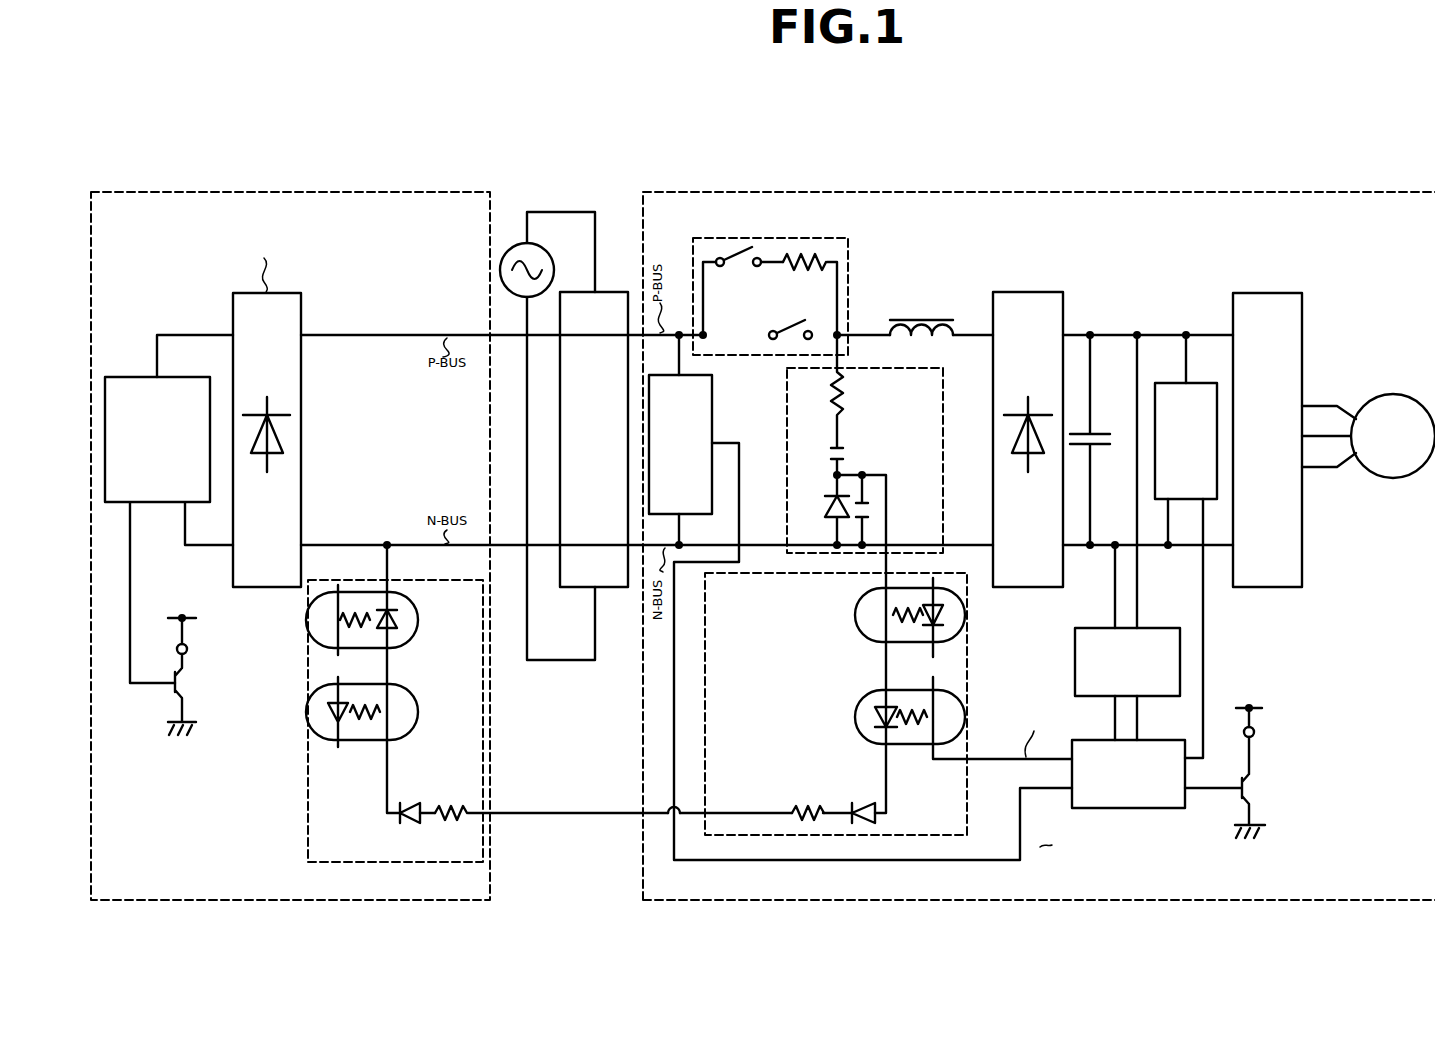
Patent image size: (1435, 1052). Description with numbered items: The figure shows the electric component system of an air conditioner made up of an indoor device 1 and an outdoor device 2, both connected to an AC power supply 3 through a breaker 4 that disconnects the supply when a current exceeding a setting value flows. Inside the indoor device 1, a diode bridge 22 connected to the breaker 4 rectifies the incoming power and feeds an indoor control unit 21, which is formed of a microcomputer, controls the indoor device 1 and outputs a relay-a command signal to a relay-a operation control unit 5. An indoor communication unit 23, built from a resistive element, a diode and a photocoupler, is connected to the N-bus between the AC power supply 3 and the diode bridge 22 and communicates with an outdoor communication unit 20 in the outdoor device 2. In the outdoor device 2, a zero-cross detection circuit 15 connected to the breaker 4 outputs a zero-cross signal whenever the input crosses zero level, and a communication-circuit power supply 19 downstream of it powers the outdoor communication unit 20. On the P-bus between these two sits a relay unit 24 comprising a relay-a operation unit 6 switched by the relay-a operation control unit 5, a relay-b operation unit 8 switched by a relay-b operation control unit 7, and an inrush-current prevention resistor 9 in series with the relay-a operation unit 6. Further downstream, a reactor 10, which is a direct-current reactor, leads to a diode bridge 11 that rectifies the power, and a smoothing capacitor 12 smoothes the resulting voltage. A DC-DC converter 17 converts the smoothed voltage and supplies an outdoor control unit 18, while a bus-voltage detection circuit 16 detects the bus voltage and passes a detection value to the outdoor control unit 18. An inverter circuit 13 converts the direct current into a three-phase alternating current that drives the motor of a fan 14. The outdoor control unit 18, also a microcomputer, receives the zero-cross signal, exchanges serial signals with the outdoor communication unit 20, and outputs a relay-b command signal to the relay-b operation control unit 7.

The indoor device 1 is at (290, 190).
The outdoor device 2 is at (1045, 190).
The AC power supply 3 is at (519, 242).
The breaker 4 is at (605, 292).
The relay-a operation control unit 5 is at (190, 684).
The relay-a operation unit 6 is at (724, 258).
The relay-b operation control unit 7 is at (1258, 790).
The relay-b operation unit 8 is at (780, 331).
The inrush-current prevention resistor 9 is at (800, 258).
The reactor 10 is at (926, 318).
The diode bridge 11 is at (1030, 292).
The smoothing capacitor 12 is at (1096, 432).
The inverter circuit 13 is at (1302, 325).
The fan 14 is at (1400, 478).
The zero-cross detection circuit 15 is at (712, 395).
The bus-voltage detection circuit 16 is at (1196, 383).
The DC-DC converter 17 is at (1149, 628).
The outdoor control unit 18 is at (1149, 740).
The communication-circuit power supply 19 is at (912, 369).
The outdoor communication unit 20 is at (968, 779).
The indoor control unit 21 is at (172, 378).
The diode bridge 22 is at (302, 303).
The indoor communication unit 23 is at (411, 863).
The relay unit 24 is at (832, 236).